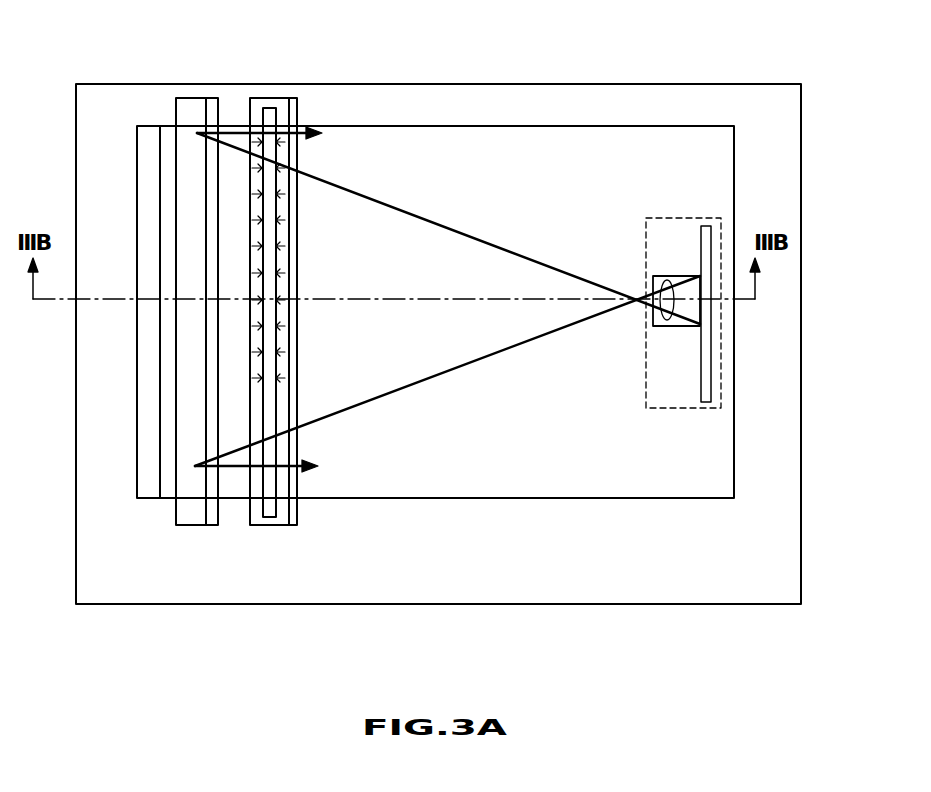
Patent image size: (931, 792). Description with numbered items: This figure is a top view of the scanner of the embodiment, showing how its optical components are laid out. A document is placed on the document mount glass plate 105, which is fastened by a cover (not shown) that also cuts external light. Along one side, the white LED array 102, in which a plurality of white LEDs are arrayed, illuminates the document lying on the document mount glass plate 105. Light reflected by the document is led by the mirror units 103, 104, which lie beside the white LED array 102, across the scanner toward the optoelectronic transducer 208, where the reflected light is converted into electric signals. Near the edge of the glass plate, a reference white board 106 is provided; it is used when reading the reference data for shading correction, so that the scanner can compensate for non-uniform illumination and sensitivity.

The white LED array 102 is at (265, 98).
The mirror unit 103 is at (294, 98).
The mirror unit 104 is at (192, 98).
The document mount glass plate 105 is at (662, 126).
The reference white board 106 is at (137, 167).
The optoelectronic transducer 208 is at (700, 316).